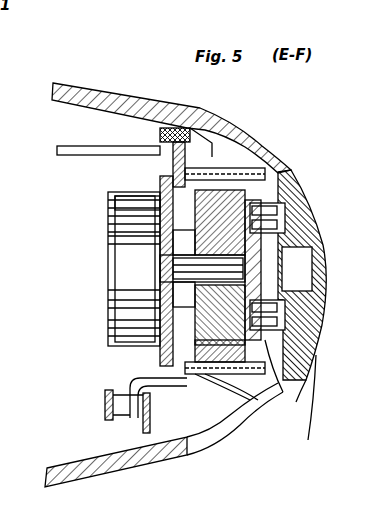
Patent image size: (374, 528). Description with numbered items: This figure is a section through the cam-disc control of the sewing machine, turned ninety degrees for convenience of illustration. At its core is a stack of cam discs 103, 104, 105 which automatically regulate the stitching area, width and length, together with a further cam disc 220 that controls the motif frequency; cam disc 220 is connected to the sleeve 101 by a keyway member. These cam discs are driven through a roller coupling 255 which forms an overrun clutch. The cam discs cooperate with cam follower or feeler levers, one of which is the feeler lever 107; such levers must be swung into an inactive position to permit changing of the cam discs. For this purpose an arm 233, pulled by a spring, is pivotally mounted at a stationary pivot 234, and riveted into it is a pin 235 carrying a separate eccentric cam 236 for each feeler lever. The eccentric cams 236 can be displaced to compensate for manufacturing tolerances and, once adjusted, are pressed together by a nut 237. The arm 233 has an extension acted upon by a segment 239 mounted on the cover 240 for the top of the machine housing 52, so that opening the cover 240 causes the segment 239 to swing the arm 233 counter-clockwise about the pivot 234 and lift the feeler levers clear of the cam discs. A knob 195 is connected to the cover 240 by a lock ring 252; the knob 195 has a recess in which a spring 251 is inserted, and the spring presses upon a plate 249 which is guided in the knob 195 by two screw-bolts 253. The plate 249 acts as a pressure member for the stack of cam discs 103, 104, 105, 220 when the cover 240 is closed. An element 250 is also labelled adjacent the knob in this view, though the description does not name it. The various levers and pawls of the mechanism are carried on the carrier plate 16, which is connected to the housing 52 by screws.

The carrier plate 16 is at (160, 160).
The housing 52 is at (166, 462).
The sleeve 101 is at (160, 260).
The cam disc 103 is at (235, 168).
The cam disc 104 is at (252, 190).
The cam disc 105 is at (215, 160).
The feeler lever 107 is at (135, 378).
The knob 195 is at (305, 407).
The cam disc 220 is at (160, 233).
The arm 233 is at (160, 322).
The pivot 234 is at (160, 182).
The pin 235 is at (245, 410).
The eccentric cam 236 is at (262, 405).
The nut 237 is at (282, 400).
The segment 239 is at (70, 153).
The cover 240 is at (196, 112).
The plate 249 is at (160, 293).
The block end 250 is at (300, 391).
The spring 251 is at (302, 175).
The lock ring 252 is at (276, 185).
The screw-bolt 253 is at (268, 298).
The roller coupling 255 is at (130, 207).